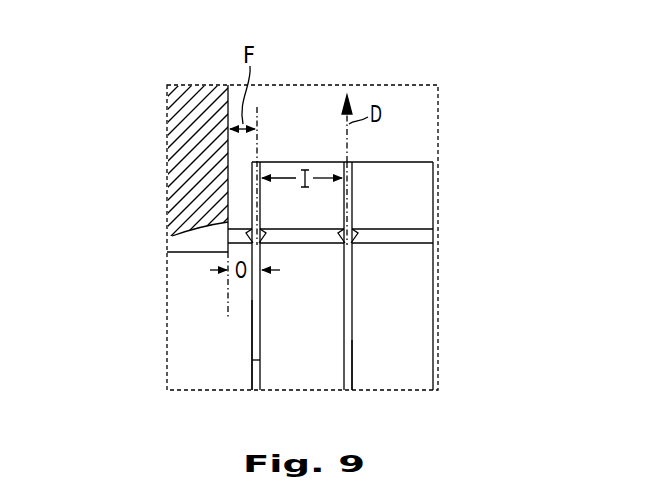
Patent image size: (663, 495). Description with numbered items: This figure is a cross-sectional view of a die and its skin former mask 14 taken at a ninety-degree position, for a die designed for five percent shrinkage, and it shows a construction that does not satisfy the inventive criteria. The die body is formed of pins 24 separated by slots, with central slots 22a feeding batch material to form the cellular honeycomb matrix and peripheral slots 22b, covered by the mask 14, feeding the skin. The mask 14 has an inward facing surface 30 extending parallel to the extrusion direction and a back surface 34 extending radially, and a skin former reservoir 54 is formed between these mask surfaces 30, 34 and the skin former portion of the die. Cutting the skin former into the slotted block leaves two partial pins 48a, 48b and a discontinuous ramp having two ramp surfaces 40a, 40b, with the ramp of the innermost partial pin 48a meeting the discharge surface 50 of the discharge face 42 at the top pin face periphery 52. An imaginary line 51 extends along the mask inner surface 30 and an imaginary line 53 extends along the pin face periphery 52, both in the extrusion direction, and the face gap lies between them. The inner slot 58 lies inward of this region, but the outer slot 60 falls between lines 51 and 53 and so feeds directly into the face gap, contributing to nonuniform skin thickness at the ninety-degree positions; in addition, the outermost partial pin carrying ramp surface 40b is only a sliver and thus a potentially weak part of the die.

The skin former mask 14 is at (190, 124).
The inward facing surface 30 is at (238, 118).
The back surface 34 is at (172, 235).
The ramp surface 40a is at (254, 161).
The ramp surface 40b is at (243, 227).
The discharge face 42 is at (391, 160).
The partial pin 48a is at (332, 210).
The partial pin 48b is at (250, 203).
The discharge surface 50 is at (322, 160).
The imaginary line 51 is at (228, 297).
The top pin face periphery 52 is at (262, 144).
The imaginary line 53 is at (257, 107).
The skin former reservoir 54 is at (196, 241).
The inner slot 58 is at (352, 352).
The outer slot 60 is at (251, 367).
The central slots 22a is at (352, 332).
The peripheral slots 22b is at (250, 348).
The pins 24 is at (408, 268).